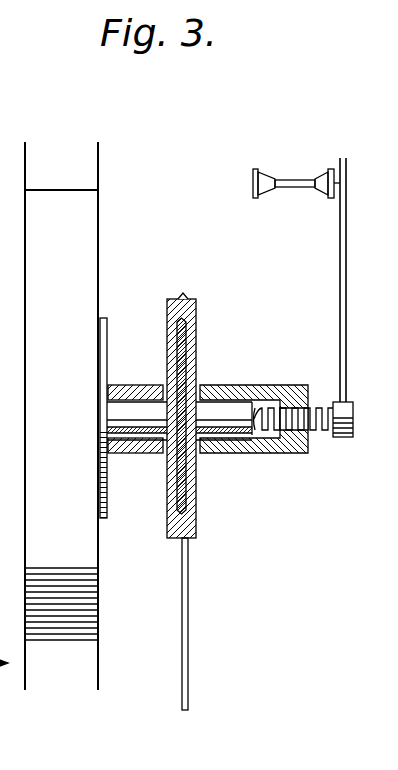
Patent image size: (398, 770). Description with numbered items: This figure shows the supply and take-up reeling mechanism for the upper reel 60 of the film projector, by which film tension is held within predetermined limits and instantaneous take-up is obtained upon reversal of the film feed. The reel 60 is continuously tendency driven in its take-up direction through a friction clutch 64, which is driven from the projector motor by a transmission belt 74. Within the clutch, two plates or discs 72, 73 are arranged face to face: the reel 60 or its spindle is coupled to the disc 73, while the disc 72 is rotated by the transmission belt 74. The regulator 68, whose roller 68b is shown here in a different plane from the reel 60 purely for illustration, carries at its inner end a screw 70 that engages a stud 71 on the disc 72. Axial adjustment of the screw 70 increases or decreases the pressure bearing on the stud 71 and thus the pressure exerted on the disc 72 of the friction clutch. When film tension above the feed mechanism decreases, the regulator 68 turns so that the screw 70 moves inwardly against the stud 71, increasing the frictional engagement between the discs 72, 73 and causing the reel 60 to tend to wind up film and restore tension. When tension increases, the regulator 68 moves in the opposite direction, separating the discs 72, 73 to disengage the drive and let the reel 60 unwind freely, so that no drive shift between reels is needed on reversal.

The upper reel 60 is at (98, 170).
The friction clutch 64 is at (268, 537).
The regulator 68 is at (340, 282).
The roller 68b is at (312, 165).
The screw 70 is at (323, 438).
The stud 71 is at (246, 420).
The disc 72 is at (196, 360).
The disc 73 is at (178, 338).
The transmission belt 74 is at (188, 605).